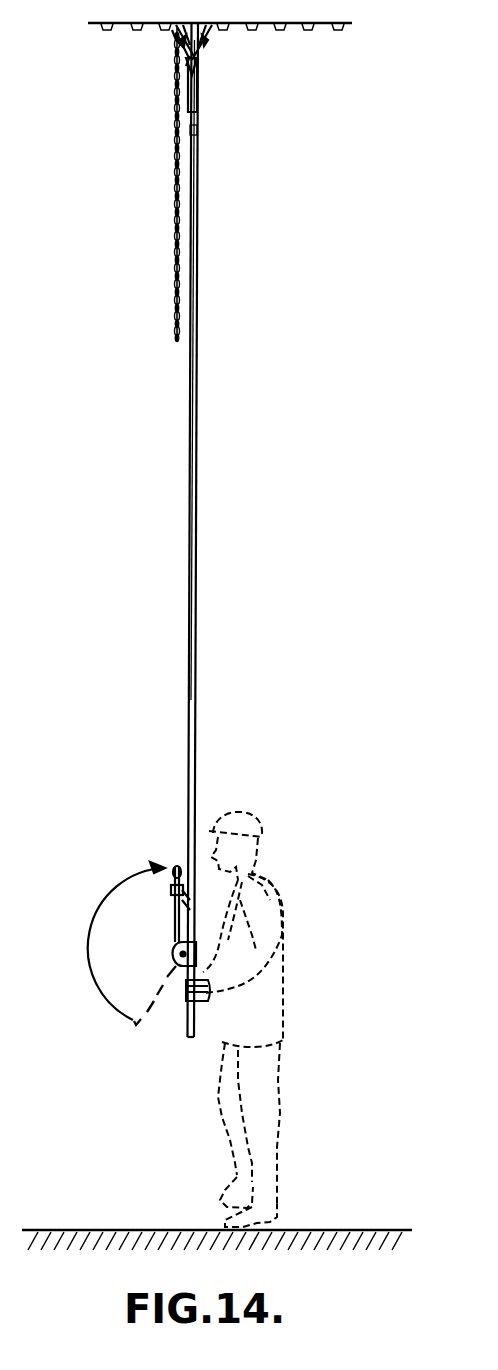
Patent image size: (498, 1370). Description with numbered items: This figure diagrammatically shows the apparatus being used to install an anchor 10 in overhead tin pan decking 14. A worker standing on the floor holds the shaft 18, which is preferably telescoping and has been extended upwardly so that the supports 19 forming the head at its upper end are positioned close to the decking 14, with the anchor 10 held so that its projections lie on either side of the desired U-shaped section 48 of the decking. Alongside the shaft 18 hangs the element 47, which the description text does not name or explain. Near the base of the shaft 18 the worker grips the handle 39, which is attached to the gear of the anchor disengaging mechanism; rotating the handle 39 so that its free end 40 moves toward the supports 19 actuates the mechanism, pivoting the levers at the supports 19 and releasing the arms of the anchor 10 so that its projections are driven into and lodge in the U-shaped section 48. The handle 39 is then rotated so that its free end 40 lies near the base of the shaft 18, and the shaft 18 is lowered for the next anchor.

The anchor 10 is at (187, 36).
The tin pan decking 14 is at (222, 25).
The shaft 18 is at (193, 357).
The supports 19 is at (201, 46).
The handle 39 is at (178, 911).
The free end 40 is at (176, 866).
The chain 47 is at (141, 185).
The U-shaped section 48 is at (177, 28).